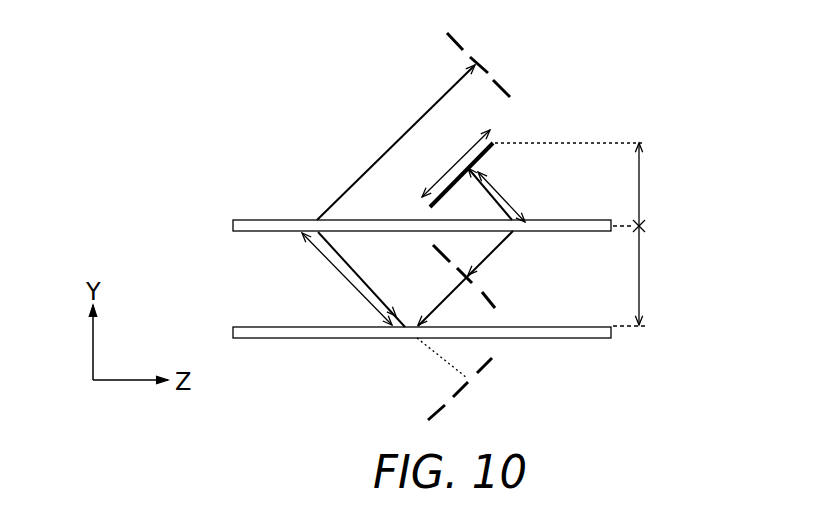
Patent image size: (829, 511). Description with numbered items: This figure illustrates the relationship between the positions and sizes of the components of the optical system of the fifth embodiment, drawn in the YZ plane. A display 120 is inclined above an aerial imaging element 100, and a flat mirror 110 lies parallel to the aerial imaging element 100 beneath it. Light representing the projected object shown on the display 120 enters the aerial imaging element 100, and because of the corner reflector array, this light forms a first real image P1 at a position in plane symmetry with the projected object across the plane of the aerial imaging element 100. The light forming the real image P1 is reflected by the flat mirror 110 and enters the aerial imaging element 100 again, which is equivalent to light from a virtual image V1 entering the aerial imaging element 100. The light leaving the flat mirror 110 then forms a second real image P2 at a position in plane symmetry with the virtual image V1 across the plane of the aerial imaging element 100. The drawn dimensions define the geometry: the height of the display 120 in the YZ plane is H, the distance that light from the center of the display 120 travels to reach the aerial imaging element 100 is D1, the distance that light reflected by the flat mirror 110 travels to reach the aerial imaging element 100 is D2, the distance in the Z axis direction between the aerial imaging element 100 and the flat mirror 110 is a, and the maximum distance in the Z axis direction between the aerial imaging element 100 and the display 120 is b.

The aerial imaging element 100 is at (283, 220).
The flat mirror 110 is at (283, 327).
The display 120 is at (492, 146).
The real image (first real image) P1 is at (488, 292).
The real image (second real image) P2 is at (505, 87).
The virtual image V1 is at (480, 368).
The size (height) of the display H is at (456, 163).
The distance from display center to aerial imaging element D1 is at (503, 196).
The distance from flat mirror to aerial imaging element D2 is at (347, 279).
The distance between aerial imaging element and flat mirror a is at (652, 275).
The maximum distance between aerial imaging element and display b is at (652, 184).